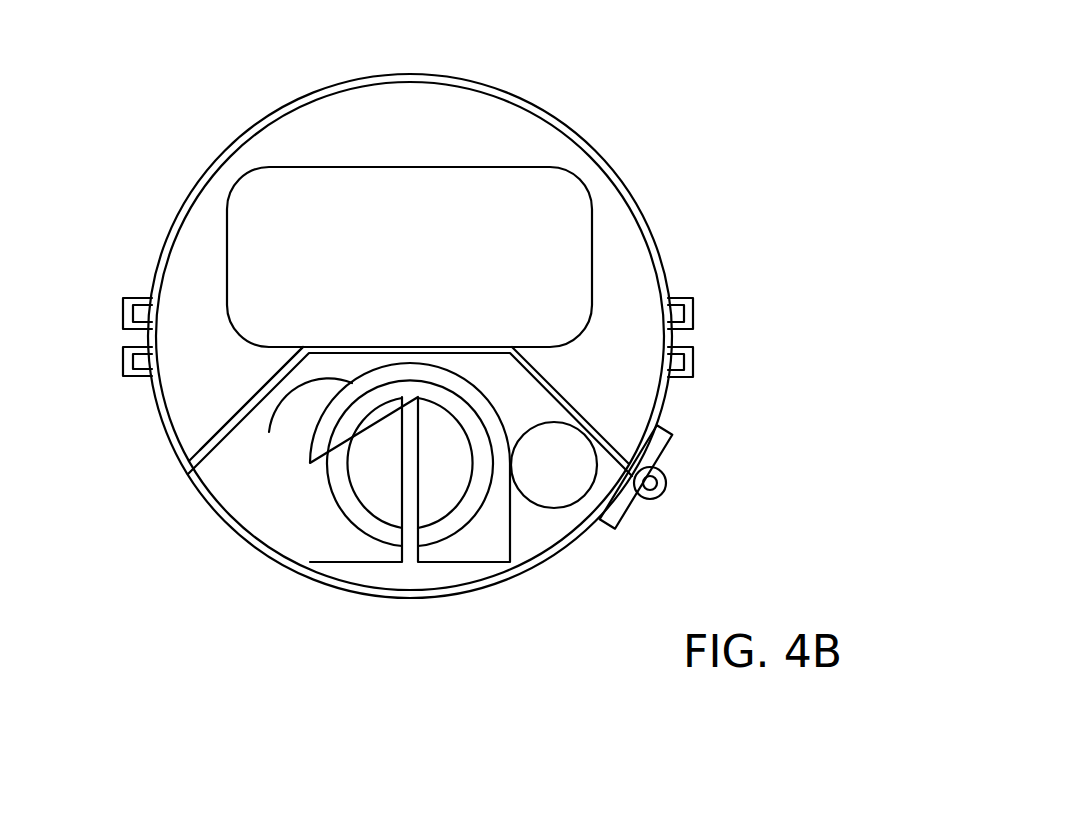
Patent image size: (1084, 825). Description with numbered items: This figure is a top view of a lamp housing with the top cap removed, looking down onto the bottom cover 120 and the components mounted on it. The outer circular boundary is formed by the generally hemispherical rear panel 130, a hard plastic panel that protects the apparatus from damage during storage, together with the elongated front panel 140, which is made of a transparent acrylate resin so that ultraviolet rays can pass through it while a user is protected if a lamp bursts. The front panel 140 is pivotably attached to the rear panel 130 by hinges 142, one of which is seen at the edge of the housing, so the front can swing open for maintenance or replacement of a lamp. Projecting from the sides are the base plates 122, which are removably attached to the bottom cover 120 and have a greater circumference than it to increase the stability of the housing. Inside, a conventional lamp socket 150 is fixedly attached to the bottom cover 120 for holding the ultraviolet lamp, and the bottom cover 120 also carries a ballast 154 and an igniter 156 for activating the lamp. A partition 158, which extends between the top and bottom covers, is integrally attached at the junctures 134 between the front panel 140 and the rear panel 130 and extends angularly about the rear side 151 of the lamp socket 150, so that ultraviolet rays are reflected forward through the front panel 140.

The bottom cover 120 is at (440, 134).
The base plate 122 is at (124, 298).
The rear panel 130 is at (598, 156).
The junctures 134 is at (183, 477).
The front panel 140 is at (366, 591).
The hinges 142 is at (657, 452).
The lamp sockets 150 is at (466, 548).
The rear side 151 is at (297, 425).
The ballast 154 is at (444, 275).
The igniter 156 is at (552, 495).
The partition 158 is at (225, 435).